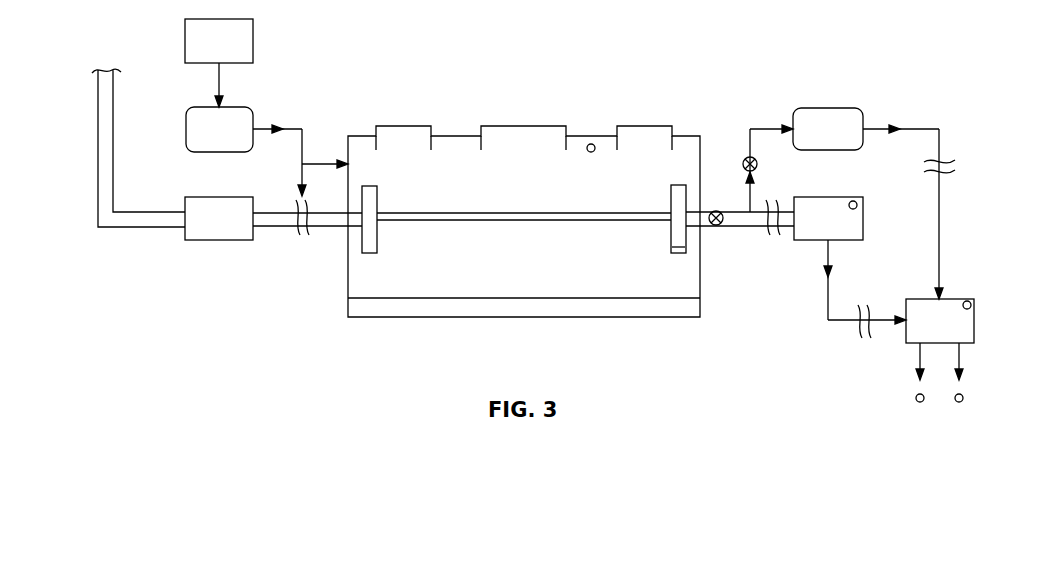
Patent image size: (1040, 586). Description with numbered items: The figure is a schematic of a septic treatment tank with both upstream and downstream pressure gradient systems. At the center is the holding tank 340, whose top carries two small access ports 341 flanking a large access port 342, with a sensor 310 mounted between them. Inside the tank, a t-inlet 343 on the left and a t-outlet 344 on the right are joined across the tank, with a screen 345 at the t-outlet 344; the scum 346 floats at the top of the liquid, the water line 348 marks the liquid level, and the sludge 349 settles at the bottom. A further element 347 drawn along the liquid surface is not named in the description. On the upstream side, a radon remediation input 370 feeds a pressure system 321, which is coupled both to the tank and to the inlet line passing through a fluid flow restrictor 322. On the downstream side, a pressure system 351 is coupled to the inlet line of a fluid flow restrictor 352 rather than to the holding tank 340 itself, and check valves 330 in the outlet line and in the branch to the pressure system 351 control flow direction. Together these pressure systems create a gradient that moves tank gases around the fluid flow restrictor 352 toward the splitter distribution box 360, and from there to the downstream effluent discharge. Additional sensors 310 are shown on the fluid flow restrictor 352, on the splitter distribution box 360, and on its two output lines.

The sensors 310 is at (592, 143).
The pressure system 321 is at (237, 142).
The fluid flow restrictor 322 is at (237, 231).
The check valves 330 is at (723, 219).
The holding tank 340 is at (431, 74).
The small access ports 341 is at (405, 125).
The large access port 342 is at (525, 125).
The t-inlet 343 is at (372, 238).
The t-outlet 344 is at (676, 233).
The screen 345 is at (679, 250).
The scum 346 is at (528, 211).
The shaft lower line 347 is at (528, 223).
The water line 348 is at (541, 284).
The sludge 349 is at (522, 310).
The pressure system 351 is at (846, 141).
The fluid flow restrictor 352 is at (846, 231).
The splitter distribution box 360 is at (958, 333).
The radon remediation input 370 is at (237, 53).